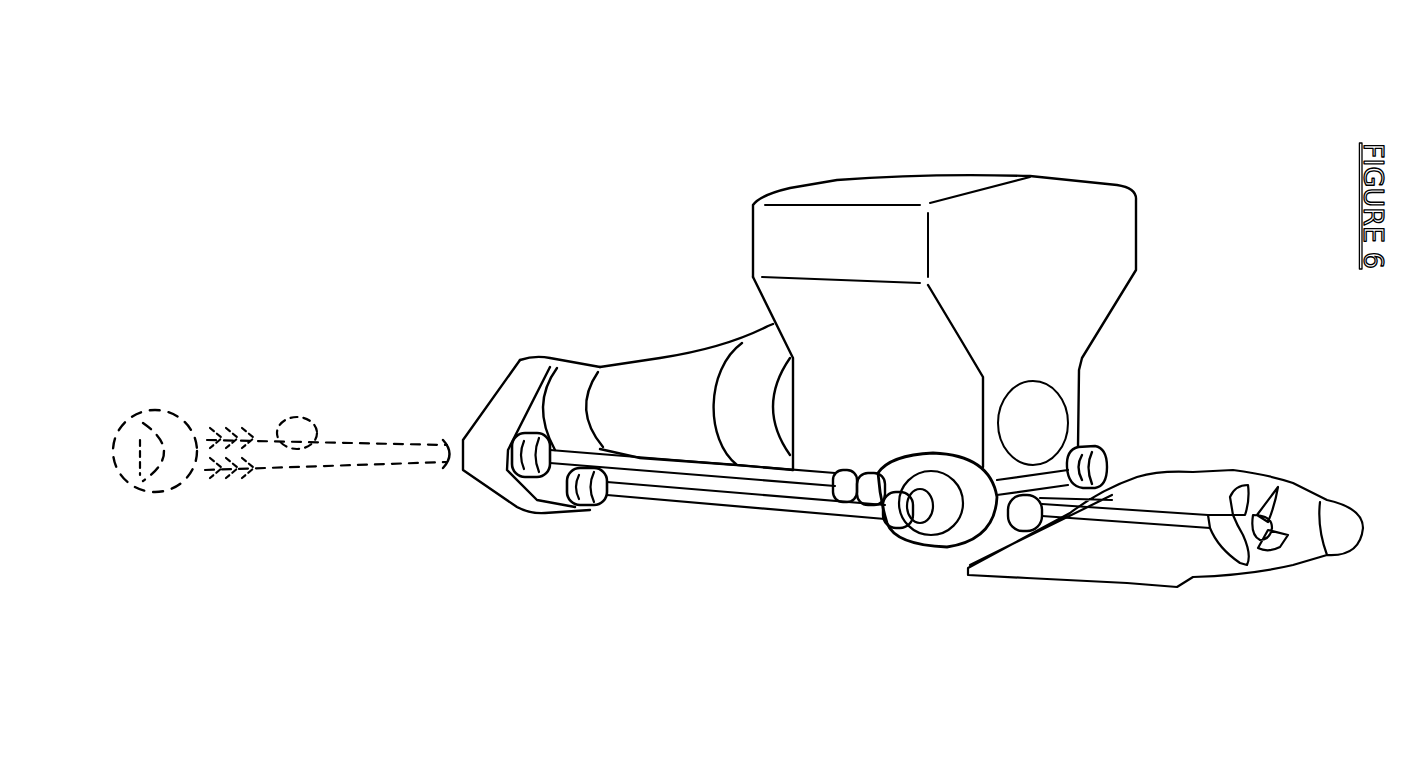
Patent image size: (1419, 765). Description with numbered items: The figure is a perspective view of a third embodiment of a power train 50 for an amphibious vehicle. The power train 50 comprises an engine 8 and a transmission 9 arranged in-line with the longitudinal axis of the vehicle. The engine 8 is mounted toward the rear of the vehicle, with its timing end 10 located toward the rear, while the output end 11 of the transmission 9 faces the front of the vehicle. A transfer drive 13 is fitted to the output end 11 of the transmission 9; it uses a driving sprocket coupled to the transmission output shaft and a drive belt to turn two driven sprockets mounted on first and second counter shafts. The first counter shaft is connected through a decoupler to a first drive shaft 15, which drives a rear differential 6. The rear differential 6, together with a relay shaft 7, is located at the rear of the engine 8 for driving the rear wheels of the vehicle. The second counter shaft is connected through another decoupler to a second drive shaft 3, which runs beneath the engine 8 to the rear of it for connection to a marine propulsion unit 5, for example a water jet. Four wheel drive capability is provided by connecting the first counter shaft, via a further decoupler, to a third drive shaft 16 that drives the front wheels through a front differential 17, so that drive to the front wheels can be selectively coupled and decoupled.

The second drive shaft 3 is at (785, 497).
The marine propulsion unit 5 is at (1165, 528).
The rear differential 6 is at (941, 518).
The relay shaft 7 is at (1077, 450).
The engine 8 is at (868, 373).
The transmission 9 is at (663, 392).
The timing end 10 is at (944, 320).
The output end 11 is at (576, 392).
The transfer drive 13 is at (508, 395).
The first drive shaft 15 is at (662, 467).
The third drive shaft 16 is at (387, 452).
The front differential 17 is at (193, 462).
The power train 50 is at (796, 138).